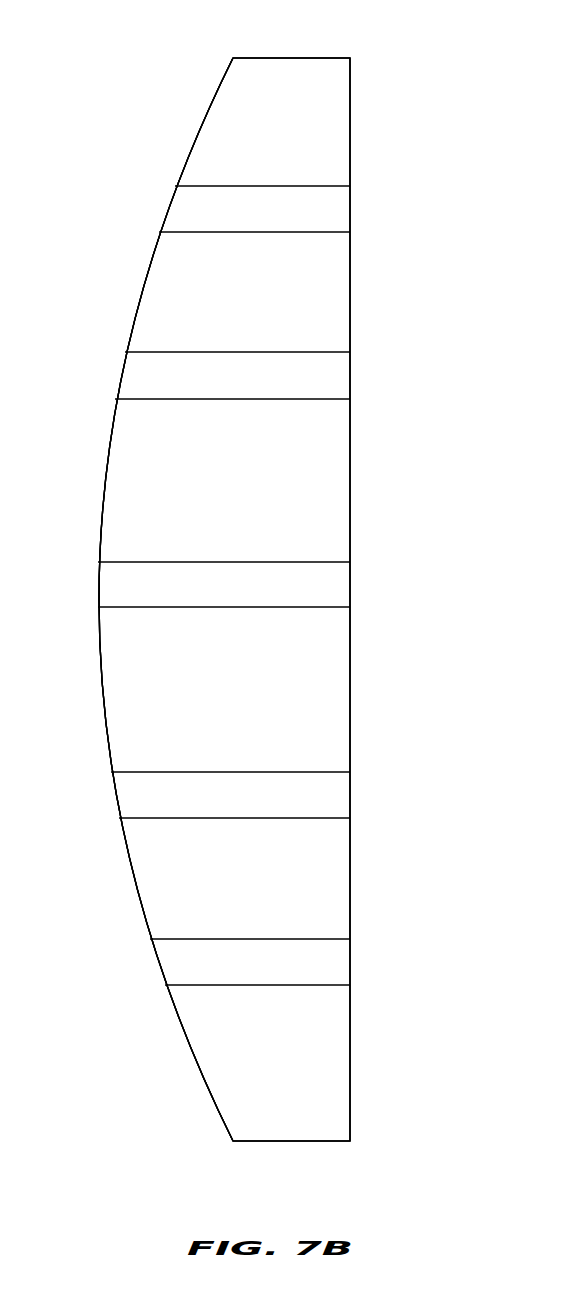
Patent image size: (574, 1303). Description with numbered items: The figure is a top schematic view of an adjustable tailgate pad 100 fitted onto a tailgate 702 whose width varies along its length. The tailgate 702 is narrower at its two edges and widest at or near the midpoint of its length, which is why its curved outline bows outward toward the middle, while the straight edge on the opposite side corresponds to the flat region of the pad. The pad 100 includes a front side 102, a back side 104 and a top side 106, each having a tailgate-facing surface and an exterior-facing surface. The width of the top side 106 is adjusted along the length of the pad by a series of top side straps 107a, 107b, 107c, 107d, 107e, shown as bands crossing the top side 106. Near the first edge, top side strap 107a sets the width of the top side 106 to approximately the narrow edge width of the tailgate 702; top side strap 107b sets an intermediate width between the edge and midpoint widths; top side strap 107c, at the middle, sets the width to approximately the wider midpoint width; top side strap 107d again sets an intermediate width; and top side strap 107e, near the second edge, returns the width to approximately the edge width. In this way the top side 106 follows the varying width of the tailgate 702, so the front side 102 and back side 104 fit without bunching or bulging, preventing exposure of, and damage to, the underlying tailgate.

The adjustable tailgate pad 100 is at (167, 48).
The front side 102 is at (102, 702).
The back side 104 is at (351, 732).
The top side 106 is at (251, 704).
The top side strap 107a is at (351, 962).
The top side strap 107b is at (351, 793).
The top side strap 107c is at (351, 588).
The top side strap 107d is at (351, 378).
The top side strap 107e is at (351, 208).
The tailgate 702 is at (135, 888).